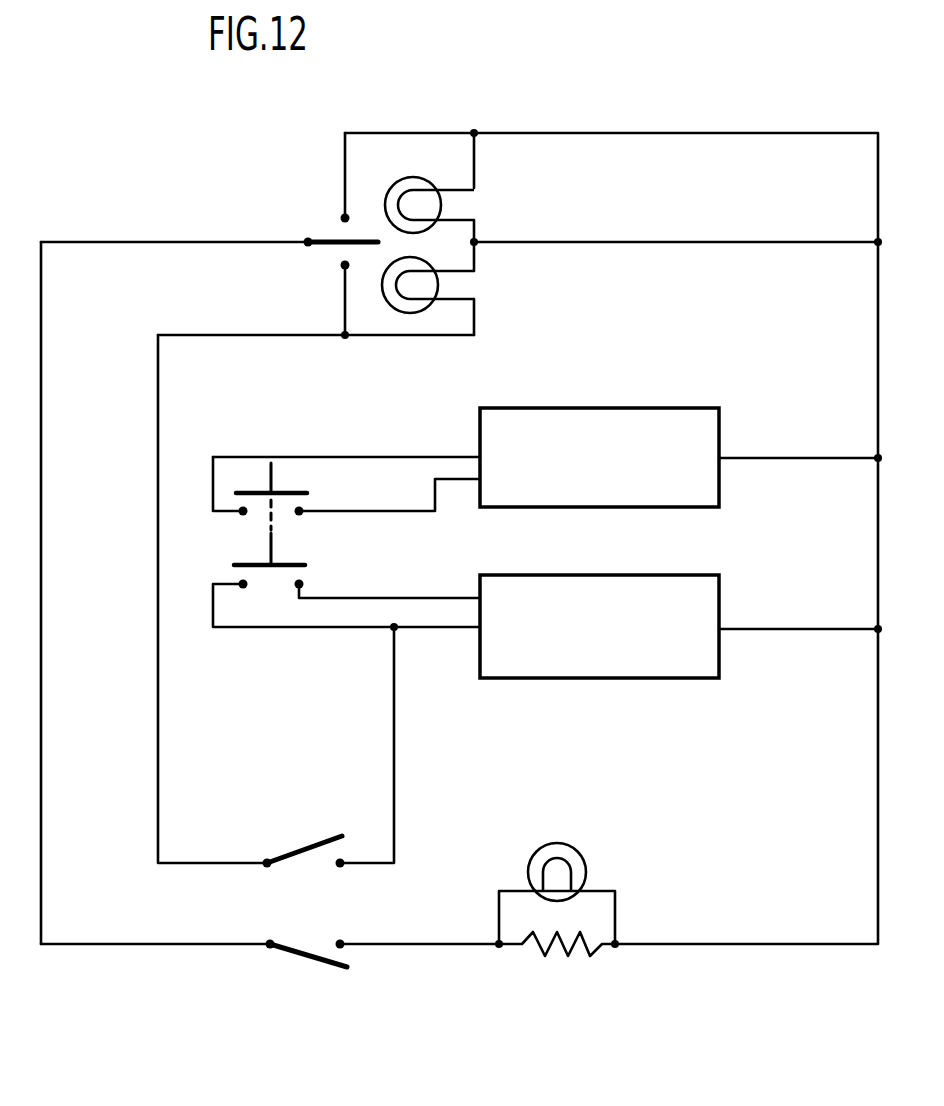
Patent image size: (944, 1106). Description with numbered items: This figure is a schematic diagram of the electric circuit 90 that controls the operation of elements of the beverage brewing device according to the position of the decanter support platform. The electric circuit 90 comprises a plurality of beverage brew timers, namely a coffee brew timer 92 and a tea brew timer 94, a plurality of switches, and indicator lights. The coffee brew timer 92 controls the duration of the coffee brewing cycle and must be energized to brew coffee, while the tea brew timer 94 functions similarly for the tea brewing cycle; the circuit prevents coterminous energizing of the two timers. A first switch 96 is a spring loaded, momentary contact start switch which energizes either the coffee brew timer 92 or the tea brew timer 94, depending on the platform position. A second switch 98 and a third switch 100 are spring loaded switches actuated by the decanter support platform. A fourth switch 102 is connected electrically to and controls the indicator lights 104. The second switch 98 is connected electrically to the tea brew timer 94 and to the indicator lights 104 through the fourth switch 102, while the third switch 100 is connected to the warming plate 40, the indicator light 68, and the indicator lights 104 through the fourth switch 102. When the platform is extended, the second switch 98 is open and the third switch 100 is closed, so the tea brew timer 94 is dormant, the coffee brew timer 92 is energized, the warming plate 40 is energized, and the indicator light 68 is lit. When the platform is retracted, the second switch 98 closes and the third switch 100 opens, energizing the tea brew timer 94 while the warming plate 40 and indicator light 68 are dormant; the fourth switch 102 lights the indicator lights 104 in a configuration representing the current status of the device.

The electric circuit 90 is at (268, 216).
The fourth switch 102 is at (325, 240).
The indicator lights 104 is at (410, 177).
The coffee brew timer 92 is at (578, 407).
The tea brew timer 94 is at (571, 680).
The first switch 96 is at (257, 550).
The second switch 98 is at (300, 850).
The third switch 100 is at (300, 957).
The indicator light 68 is at (579, 847).
The warming plate 40 is at (548, 952).